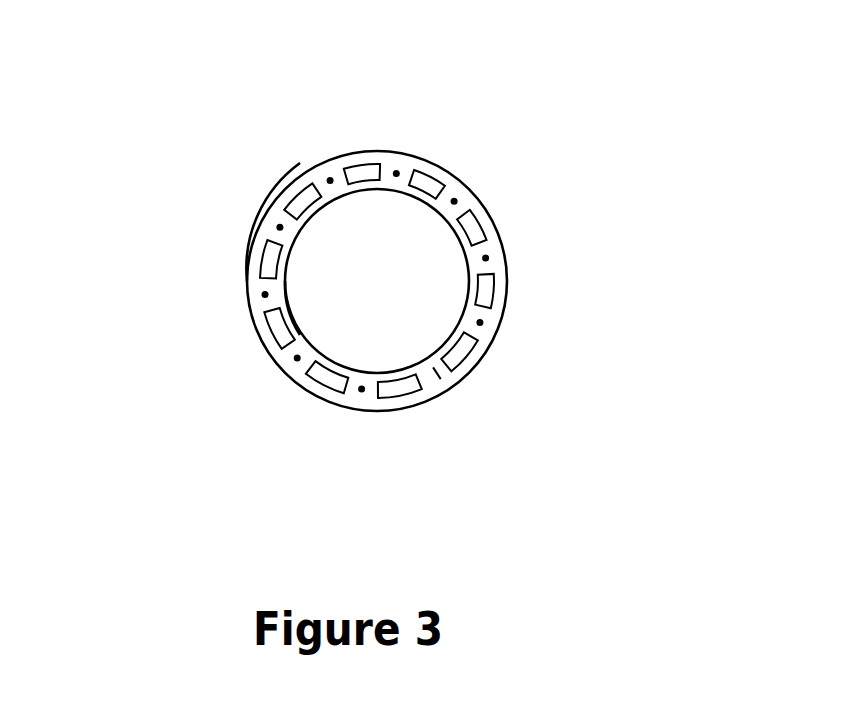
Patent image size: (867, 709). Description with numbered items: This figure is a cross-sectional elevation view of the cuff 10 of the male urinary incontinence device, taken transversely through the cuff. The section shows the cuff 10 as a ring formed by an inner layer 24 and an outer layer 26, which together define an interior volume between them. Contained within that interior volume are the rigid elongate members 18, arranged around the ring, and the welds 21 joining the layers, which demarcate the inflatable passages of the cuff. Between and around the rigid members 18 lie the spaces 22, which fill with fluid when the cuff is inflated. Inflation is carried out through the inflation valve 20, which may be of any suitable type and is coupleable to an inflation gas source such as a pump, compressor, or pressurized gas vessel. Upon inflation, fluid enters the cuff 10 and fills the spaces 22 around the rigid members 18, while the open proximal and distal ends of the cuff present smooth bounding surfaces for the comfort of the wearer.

The cuff 10 is at (518, 233).
The rigid elongate members 18 is at (492, 295).
The inflation valve 20 is at (425, 373).
The welds 21 is at (330, 182).
The spaces 22 is at (258, 230).
The inner layer 24 is at (283, 283).
The outer layer 26 is at (442, 168).